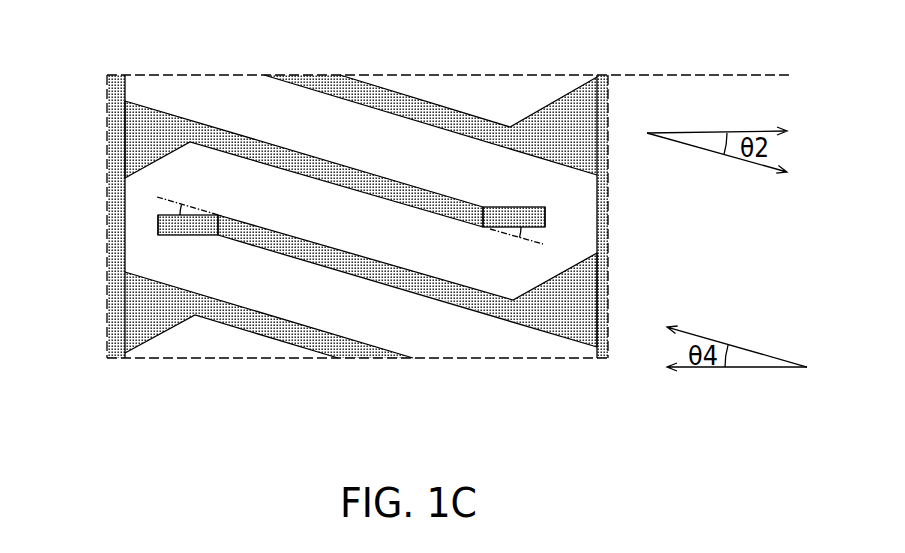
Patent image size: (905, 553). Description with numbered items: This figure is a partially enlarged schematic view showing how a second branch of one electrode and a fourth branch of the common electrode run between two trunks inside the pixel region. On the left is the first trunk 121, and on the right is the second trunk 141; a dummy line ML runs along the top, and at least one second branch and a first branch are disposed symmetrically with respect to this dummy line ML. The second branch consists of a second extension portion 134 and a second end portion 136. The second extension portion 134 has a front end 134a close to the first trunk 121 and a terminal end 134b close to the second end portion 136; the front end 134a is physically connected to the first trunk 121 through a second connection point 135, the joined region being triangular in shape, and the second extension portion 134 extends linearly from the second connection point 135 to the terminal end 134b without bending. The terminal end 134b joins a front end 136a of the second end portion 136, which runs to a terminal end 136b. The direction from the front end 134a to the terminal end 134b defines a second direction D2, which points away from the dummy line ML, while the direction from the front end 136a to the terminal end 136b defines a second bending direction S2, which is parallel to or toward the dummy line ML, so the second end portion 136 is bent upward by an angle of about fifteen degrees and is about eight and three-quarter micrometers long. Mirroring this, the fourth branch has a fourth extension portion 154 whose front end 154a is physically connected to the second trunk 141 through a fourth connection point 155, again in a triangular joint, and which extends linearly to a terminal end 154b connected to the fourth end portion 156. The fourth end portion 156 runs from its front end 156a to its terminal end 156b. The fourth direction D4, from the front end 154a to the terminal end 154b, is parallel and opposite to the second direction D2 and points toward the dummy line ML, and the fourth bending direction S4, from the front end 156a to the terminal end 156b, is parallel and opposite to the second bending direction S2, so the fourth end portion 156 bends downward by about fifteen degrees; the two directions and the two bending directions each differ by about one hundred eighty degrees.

The first trunk 121 is at (115, 127).
The second extension portion 134 is at (353, 170).
The front end 134a is at (163, 127).
The terminal end 134b is at (458, 199).
The second connection point 135 is at (134, 95).
The second end portion 136 is at (507, 207).
The front end 136a is at (492, 207).
The terminal end 136b is at (534, 207).
The second trunk 141 is at (610, 282).
The fourth extension portion 154 is at (360, 257).
The front end 154a is at (553, 313).
The terminal end 154b is at (247, 243).
The fourth connection point 155 is at (597, 347).
The fourth end portion 156 is at (192, 236).
The front end 156a is at (212, 236).
The terminal end 156b is at (167, 236).
The dummy line ML is at (464, 75).
The second bending direction S2 is at (733, 133).
The second direction D2 is at (733, 162).
The fourth bending direction S4 is at (722, 368).
The fourth direction D4 is at (722, 339).